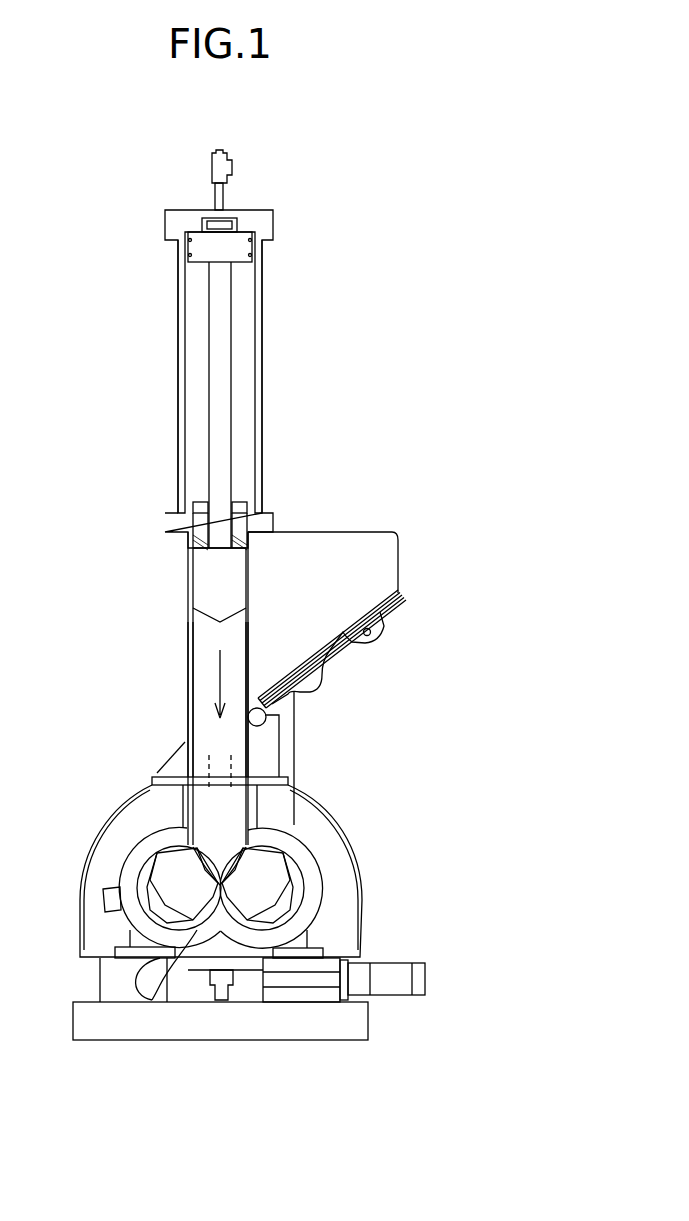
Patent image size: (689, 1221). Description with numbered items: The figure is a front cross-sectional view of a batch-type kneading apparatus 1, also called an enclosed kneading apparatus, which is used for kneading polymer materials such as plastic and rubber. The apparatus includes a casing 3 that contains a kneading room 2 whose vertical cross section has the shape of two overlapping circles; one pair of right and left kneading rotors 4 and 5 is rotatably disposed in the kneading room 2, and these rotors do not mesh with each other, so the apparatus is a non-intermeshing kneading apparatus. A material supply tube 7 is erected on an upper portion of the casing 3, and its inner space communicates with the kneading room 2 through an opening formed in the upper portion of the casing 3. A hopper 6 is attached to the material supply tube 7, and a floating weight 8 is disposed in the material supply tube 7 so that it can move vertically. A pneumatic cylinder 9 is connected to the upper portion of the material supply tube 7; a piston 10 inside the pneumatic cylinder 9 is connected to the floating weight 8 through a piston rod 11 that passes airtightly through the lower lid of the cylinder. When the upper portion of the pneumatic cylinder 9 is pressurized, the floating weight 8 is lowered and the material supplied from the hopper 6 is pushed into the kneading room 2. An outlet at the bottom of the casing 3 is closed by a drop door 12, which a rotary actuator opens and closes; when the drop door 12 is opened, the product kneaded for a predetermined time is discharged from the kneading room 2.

The batch-type kneading apparatus 1 is at (510, 93).
The kneading room 2 is at (133, 912).
The casing 3 is at (305, 846).
The kneading rotor 4 is at (305, 878).
The kneading rotor 5 is at (120, 887).
The hopper 6 is at (393, 532).
The material supply tube 7 is at (187, 700).
The floating weight 8 is at (188, 577).
The pneumatic cylinder 9 is at (179, 372).
The piston 10 is at (257, 245).
The piston rod 11 is at (231, 423).
The drop door 12 is at (152, 1000).